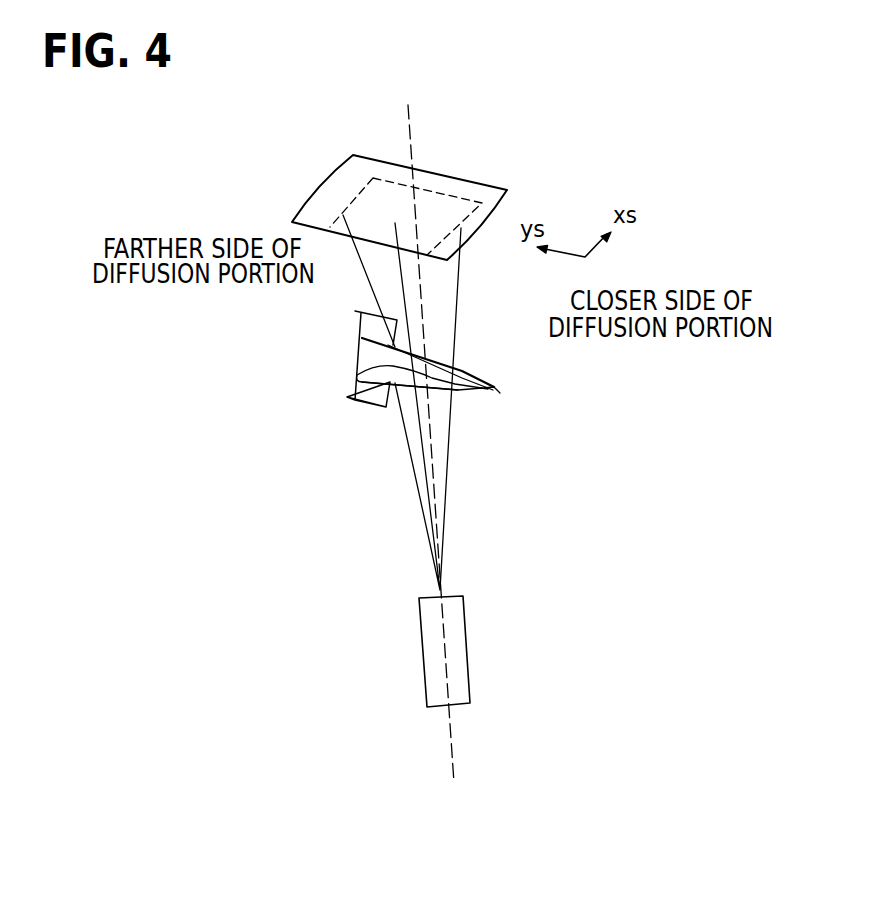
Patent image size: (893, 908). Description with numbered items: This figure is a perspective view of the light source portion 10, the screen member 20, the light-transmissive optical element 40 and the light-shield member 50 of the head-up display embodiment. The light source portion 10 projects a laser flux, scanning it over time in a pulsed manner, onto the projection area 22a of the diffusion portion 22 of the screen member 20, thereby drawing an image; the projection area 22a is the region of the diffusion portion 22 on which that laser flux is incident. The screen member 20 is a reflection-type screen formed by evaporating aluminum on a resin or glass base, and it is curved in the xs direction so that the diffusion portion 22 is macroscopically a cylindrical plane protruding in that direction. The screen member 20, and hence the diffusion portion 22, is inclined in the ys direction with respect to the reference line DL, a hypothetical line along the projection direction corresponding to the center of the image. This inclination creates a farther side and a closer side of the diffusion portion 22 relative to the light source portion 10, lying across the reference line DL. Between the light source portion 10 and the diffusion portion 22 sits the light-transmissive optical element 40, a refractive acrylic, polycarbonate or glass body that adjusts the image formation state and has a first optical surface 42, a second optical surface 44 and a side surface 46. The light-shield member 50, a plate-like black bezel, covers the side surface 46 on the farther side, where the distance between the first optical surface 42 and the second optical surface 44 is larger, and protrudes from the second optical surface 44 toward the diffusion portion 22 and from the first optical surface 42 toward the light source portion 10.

The light source portion 10 is at (468, 650).
The screen member 20 is at (500, 152).
The diffusion portion 22 is at (442, 194).
The projection area 22a is at (480, 183).
The light-transmissive optical element 40 is at (494, 408).
The first optical surface 42 is at (437, 380).
The second optical surface 44 is at (450, 373).
The side surface 46 is at (482, 390).
The light-shield member 50 is at (352, 331).
The reference line DL is at (411, 122).